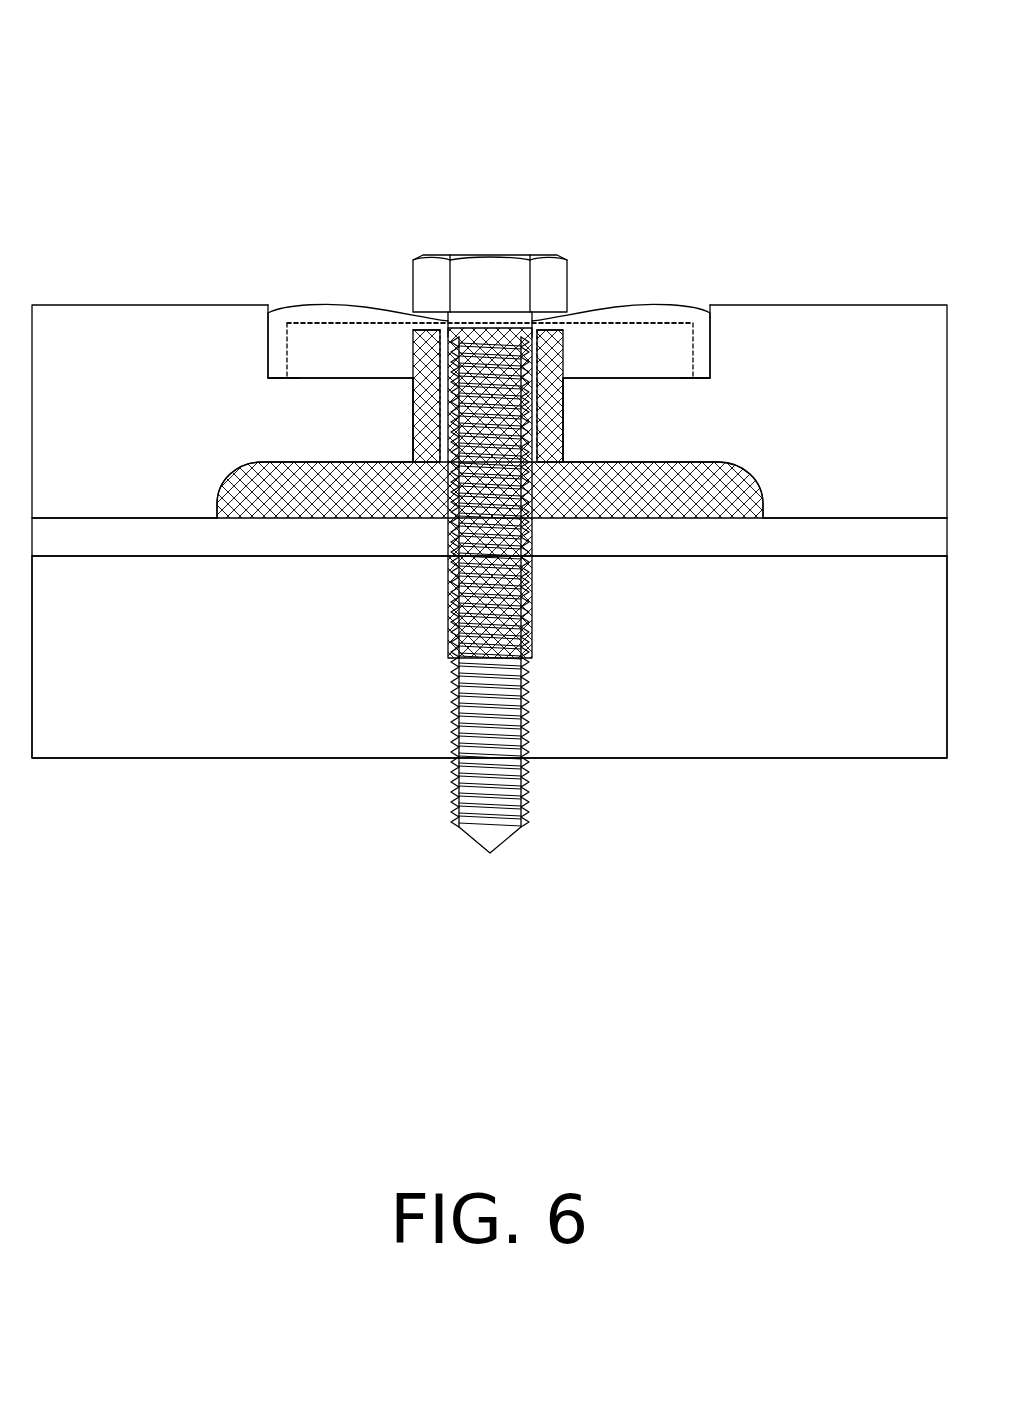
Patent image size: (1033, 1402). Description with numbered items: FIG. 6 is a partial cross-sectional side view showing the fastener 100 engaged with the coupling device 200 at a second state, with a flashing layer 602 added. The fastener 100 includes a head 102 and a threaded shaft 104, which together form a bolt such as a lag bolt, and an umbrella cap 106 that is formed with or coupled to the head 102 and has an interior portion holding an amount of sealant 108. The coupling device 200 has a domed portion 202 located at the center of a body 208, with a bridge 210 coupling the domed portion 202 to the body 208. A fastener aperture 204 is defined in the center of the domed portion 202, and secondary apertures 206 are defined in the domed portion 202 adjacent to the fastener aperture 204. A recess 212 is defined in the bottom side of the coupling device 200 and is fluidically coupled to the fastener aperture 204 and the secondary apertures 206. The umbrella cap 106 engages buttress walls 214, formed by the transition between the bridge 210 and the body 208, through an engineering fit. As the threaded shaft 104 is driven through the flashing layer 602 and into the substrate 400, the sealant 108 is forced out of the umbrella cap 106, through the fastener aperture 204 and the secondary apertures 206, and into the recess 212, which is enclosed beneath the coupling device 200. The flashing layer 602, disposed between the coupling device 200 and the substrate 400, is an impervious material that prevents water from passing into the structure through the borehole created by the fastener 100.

The fastener 100 is at (583, 489).
The head 102 is at (487, 280).
The threaded shaft 104 is at (524, 812).
The umbrella cap 106 is at (340, 320).
The sealant 108 is at (548, 375).
The coupling device 200 is at (533, 471).
The domed portion 202 is at (388, 318).
The fastener aperture 204 is at (530, 442).
The secondary apertures 206 is at (425, 435).
The body 208 is at (82, 365).
The bridge 210 is at (308, 427).
The recess 212 is at (286, 496).
The buttress walls 214 is at (257, 320).
The substrate 400 is at (83, 722).
The flashing layer 602 is at (850, 535).